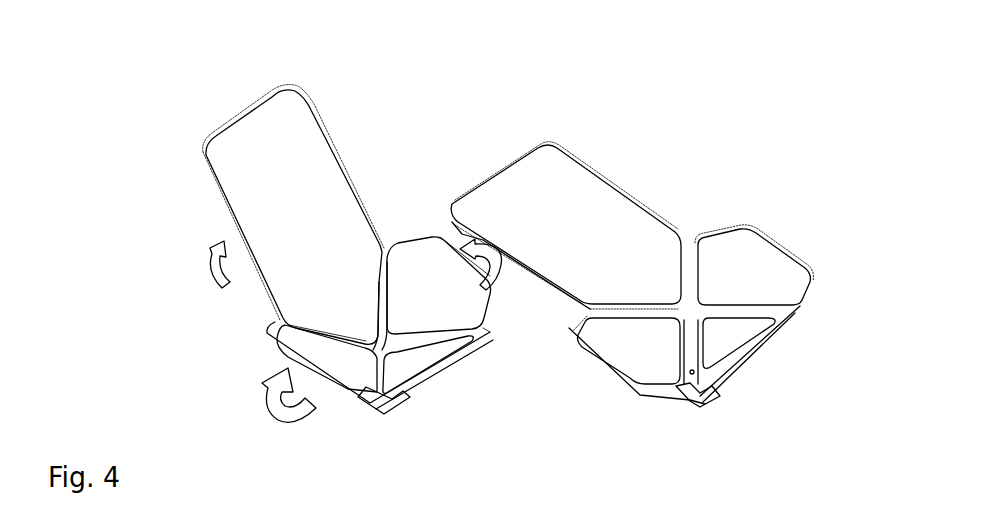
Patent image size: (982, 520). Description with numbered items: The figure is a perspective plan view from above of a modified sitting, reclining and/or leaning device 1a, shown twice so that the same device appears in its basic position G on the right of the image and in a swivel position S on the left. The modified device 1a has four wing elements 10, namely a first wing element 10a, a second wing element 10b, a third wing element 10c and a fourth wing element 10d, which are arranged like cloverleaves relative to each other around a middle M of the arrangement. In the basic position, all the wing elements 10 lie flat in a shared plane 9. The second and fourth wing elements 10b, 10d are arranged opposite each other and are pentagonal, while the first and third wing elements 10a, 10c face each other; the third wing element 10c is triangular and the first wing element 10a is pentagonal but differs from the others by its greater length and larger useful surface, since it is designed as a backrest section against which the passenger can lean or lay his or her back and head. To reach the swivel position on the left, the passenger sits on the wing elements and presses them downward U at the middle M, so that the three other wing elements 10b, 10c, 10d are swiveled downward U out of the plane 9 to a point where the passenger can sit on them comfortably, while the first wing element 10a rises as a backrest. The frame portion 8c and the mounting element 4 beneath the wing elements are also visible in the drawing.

The modified device 1a is at (258, 45).
The wing elements 10 is at (480, 118).
The first wing element 10a is at (252, 195).
The second wing element 10b is at (335, 350).
The third wing element 10c is at (410, 357).
The fourth wing element 10d is at (417, 278).
The seat frame 8c is at (455, 353).
The mounting bracket 4 is at (385, 400).
The shared plane 9 is at (689, 286).
The middle M is at (535, 328).
The downward U is at (183, 408).